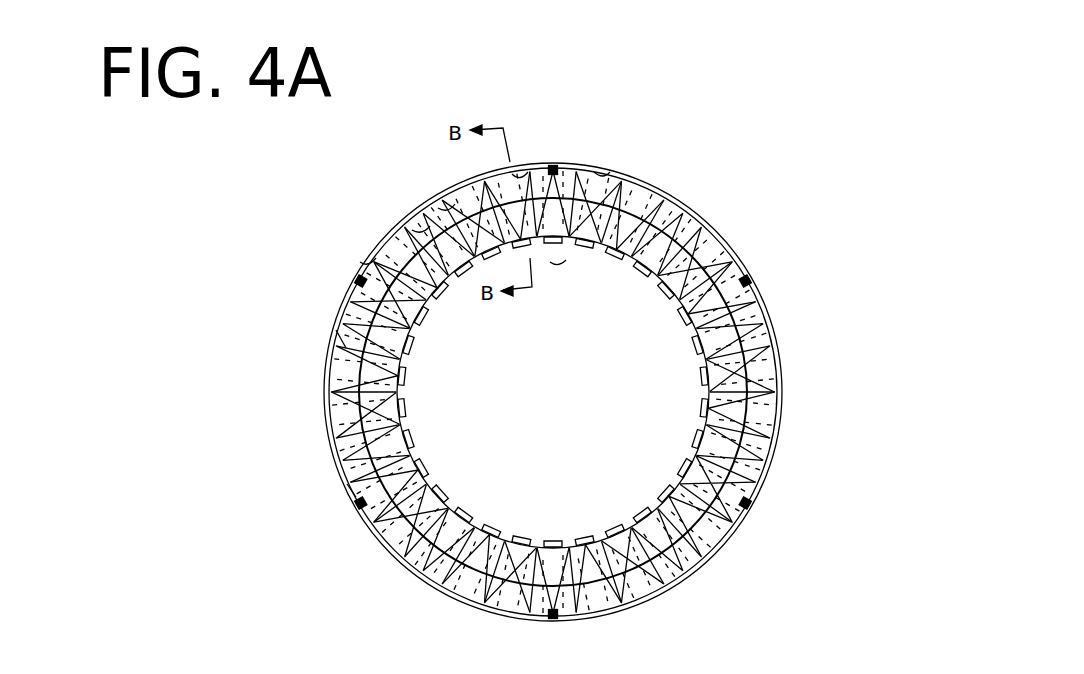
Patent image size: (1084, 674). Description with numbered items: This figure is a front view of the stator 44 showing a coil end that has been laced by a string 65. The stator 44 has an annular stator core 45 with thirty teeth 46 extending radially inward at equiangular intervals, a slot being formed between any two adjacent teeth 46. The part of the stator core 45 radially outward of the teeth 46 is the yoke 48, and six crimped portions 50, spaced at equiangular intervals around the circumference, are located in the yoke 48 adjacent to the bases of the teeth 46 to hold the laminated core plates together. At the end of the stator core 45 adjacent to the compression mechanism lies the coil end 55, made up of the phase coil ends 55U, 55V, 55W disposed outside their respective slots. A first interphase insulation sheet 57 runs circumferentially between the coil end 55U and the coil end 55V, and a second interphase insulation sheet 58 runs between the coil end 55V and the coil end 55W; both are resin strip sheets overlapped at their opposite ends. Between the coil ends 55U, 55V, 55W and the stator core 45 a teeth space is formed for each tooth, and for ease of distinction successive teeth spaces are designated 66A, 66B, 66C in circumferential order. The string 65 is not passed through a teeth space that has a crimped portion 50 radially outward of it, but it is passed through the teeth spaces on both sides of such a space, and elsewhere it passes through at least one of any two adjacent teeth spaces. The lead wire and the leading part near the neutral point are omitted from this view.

The stator 44 is at (756, 138).
The stator core 45 is at (692, 196).
The teeth 46 is at (405, 411).
The yoke 48 is at (781, 330).
The crimped portion 50 is at (556, 166).
The coil end 55 is at (318, 389).
The U-phase coil end 55U is at (618, 172).
The V-phase coil end 55V is at (448, 222).
The W-phase coil end 55W is at (604, 255).
The first interphase insulation sheet 57 is at (341, 338).
The second interphase insulation sheet 58 is at (348, 486).
The string 65 is at (715, 225).
The teeth space 66A is at (600, 168).
The teeth space 66B is at (420, 226).
The teeth space 66C is at (520, 170).